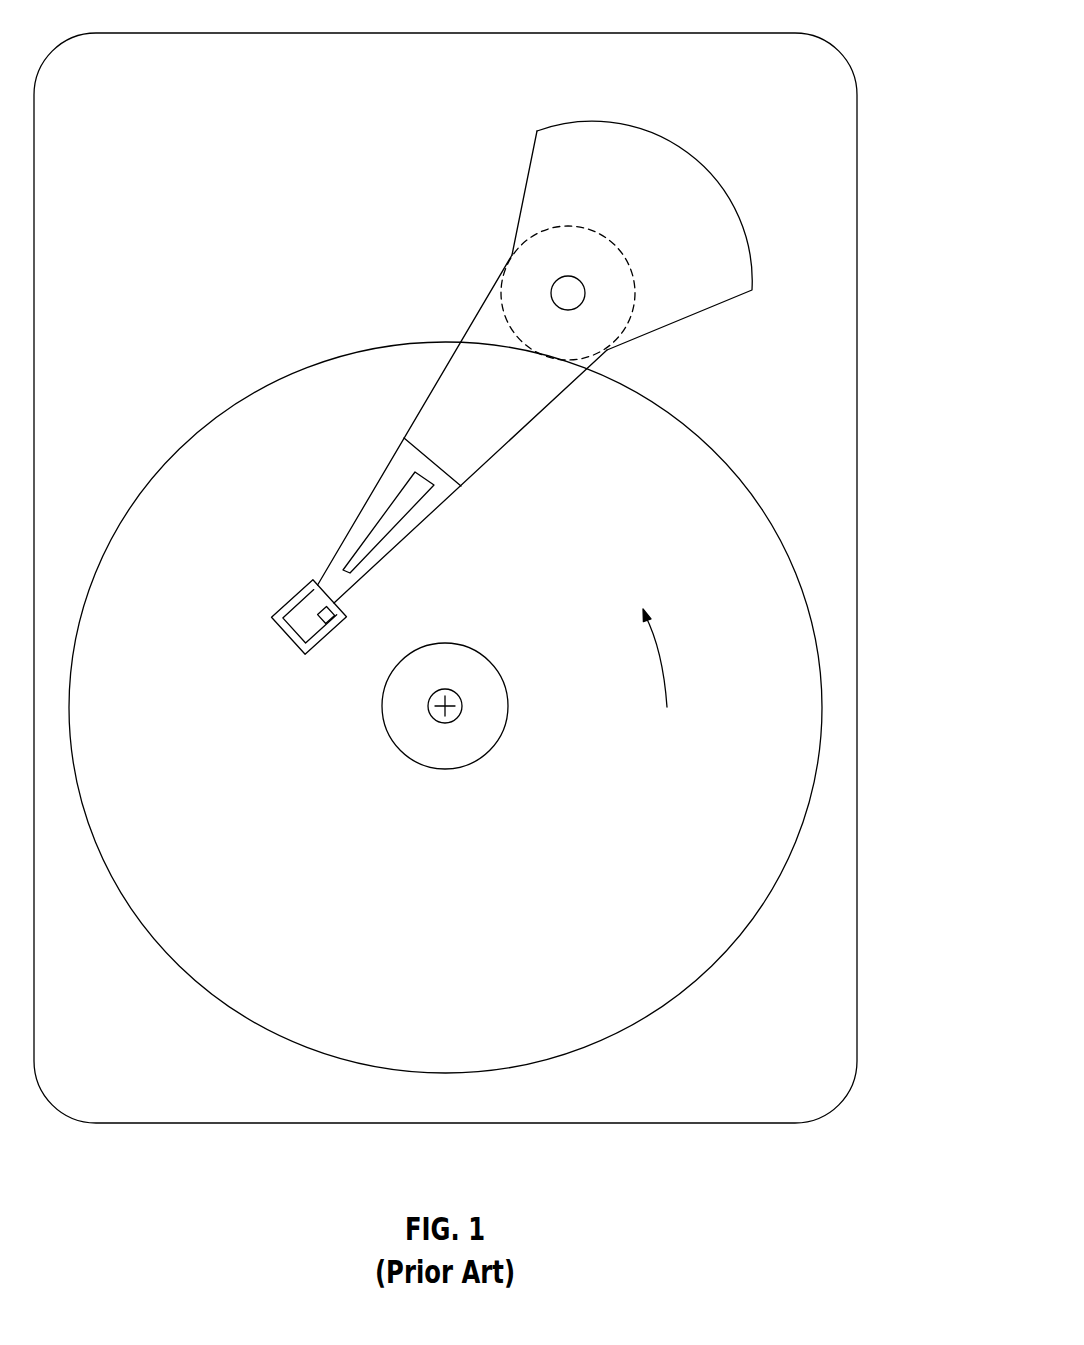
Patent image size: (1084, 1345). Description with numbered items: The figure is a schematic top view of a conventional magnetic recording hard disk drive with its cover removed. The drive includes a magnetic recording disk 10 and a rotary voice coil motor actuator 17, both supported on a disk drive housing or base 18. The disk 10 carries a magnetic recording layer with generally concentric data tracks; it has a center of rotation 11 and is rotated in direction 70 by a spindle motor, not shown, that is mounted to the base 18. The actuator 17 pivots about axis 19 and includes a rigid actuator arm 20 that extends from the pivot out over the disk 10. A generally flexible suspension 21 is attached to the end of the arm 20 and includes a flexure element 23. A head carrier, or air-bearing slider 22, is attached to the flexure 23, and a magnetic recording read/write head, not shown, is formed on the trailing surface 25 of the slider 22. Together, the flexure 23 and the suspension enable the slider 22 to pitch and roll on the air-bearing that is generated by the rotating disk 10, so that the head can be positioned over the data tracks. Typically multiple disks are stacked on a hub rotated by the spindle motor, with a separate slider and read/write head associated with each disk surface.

The magnetic recording disk 10 is at (687, 988).
The center of rotation 11 is at (458, 698).
The rotary voice coil motor actuator 17 is at (685, 158).
The disk drive housing or base 18 is at (727, 33).
The pivot axis 19 is at (565, 292).
The rigid actuator arm 20 is at (443, 390).
The suspension 21 is at (393, 478).
The air-bearing slider 22 is at (302, 587).
The flexure element 23 is at (322, 622).
The trailing surface 25 is at (283, 632).
The direction of rotation 70 is at (663, 672).